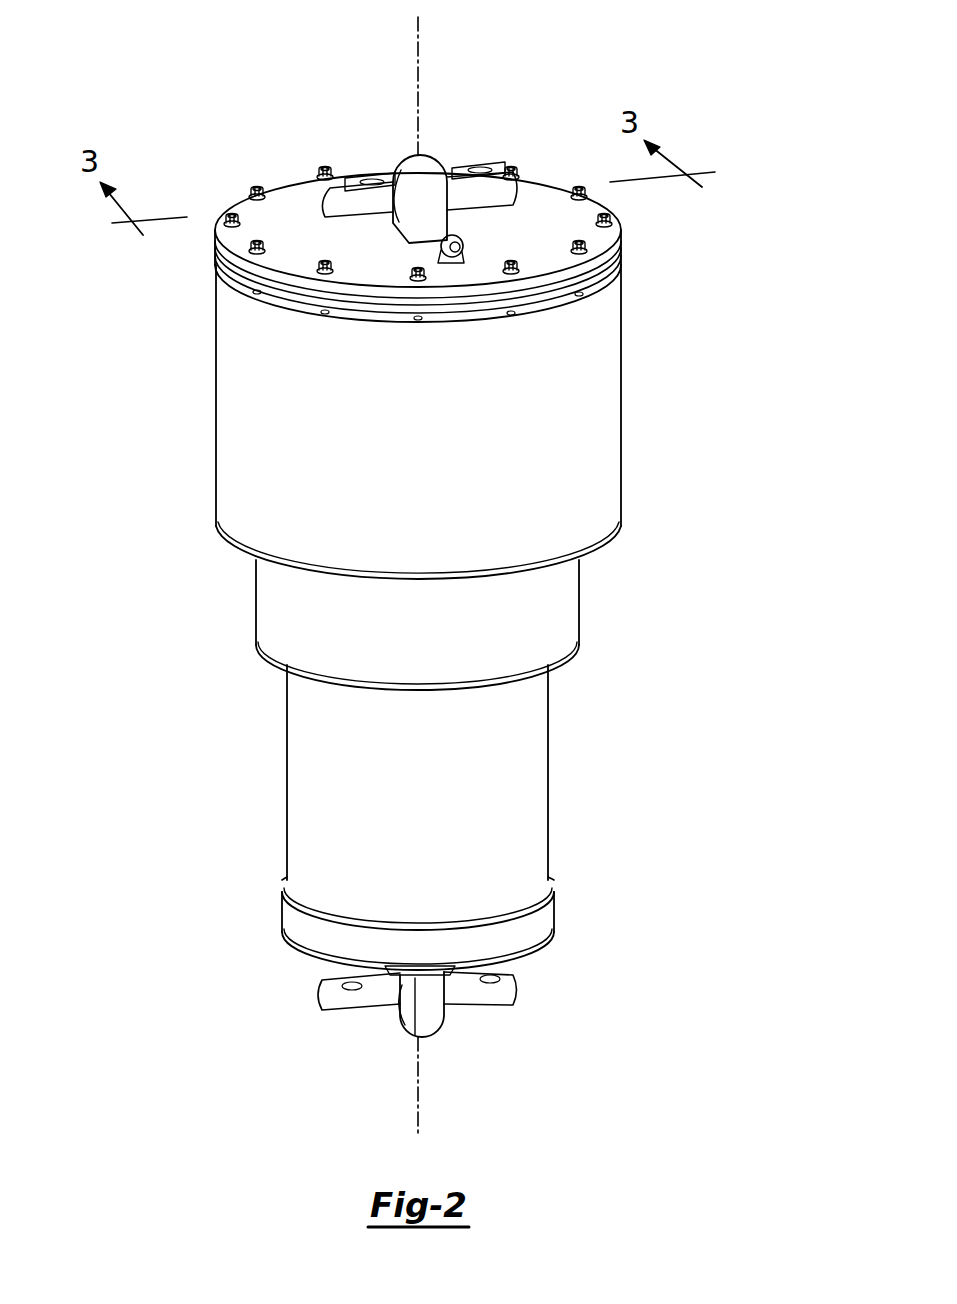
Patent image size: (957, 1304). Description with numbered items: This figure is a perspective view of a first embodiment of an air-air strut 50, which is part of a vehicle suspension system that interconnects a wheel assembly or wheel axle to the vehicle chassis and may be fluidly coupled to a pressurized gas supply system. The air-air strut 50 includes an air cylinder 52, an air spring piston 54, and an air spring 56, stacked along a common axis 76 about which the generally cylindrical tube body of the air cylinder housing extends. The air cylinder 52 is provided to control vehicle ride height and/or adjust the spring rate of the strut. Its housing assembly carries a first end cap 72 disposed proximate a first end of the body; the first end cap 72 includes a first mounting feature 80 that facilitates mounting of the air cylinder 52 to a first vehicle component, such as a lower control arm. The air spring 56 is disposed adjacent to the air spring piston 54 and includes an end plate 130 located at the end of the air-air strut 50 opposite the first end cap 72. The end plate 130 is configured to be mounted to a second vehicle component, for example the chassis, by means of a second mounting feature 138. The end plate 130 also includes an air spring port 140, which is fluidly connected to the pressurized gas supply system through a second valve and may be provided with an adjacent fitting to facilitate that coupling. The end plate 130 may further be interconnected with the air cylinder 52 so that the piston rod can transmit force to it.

The air-air strut 50 is at (186, 306).
The air cylinder 52 is at (425, 824).
The air spring piston 54 is at (425, 633).
The air spring 56 is at (419, 445).
The first end cap 72 is at (425, 950).
The axis 76 is at (418, 33).
The first mounting feature 80 is at (400, 1025).
The end plate 130 is at (536, 192).
The second mounting feature 138 is at (416, 150).
The air spring port 140 is at (462, 240).